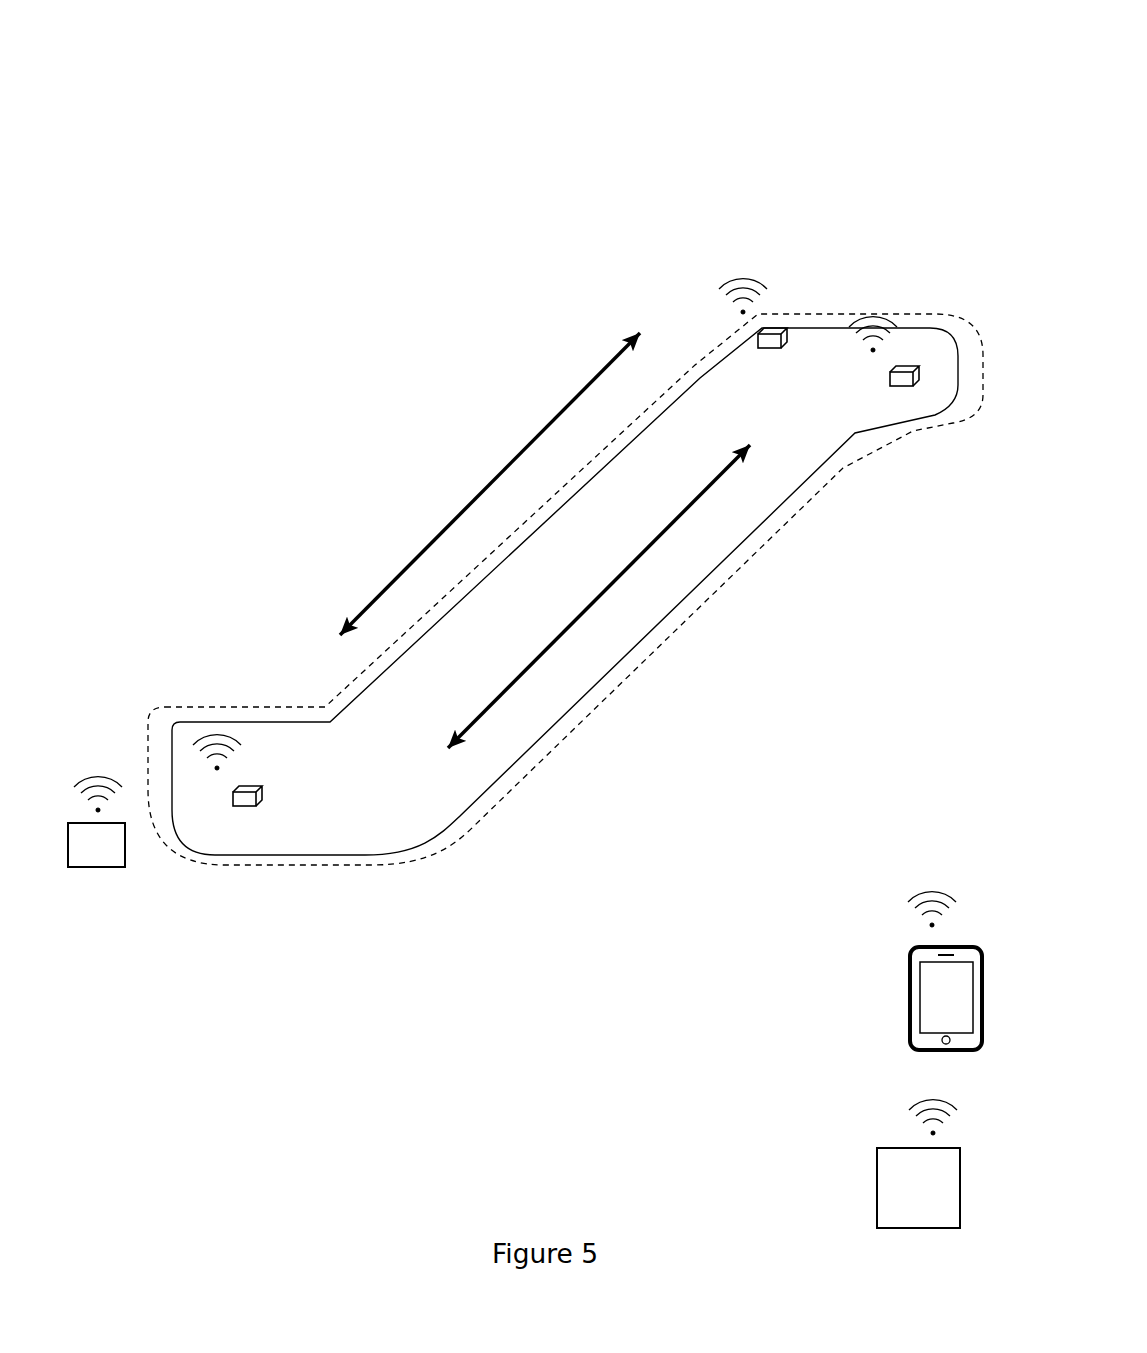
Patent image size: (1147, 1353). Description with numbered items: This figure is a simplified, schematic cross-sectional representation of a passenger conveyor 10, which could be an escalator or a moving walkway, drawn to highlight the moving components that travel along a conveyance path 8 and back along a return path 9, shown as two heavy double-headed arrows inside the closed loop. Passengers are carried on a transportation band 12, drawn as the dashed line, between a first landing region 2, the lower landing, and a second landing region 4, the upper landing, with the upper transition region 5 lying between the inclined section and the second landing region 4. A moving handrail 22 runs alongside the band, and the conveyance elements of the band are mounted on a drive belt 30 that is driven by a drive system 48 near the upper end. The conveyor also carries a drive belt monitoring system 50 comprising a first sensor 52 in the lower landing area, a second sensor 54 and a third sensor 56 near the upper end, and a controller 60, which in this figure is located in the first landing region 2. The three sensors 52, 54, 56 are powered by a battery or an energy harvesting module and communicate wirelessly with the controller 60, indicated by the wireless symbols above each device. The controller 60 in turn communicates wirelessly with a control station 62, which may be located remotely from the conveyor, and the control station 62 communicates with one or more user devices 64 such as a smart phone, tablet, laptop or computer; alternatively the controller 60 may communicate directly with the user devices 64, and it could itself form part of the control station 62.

The first landing region 2 is at (133, 480).
The second landing region 4 is at (898, 138).
The upper transition region 5 is at (767, 277).
The conveyance path 8 is at (537, 395).
The return path 9 is at (502, 683).
The passenger conveyor 10 is at (388, 152).
The transportation band 12 is at (340, 682).
The moving handrail 22 is at (633, 183).
The drive belt 30 is at (430, 615).
The drive system 48 is at (937, 370).
The drive belt monitoring system 50 is at (457, 1048).
The first sensor 52 is at (267, 807).
The second sensor 54 is at (895, 398).
The third sensor 56 is at (778, 380).
The controller 60 is at (118, 872).
The control station 62 is at (847, 1167).
The user device 64 is at (902, 1005).